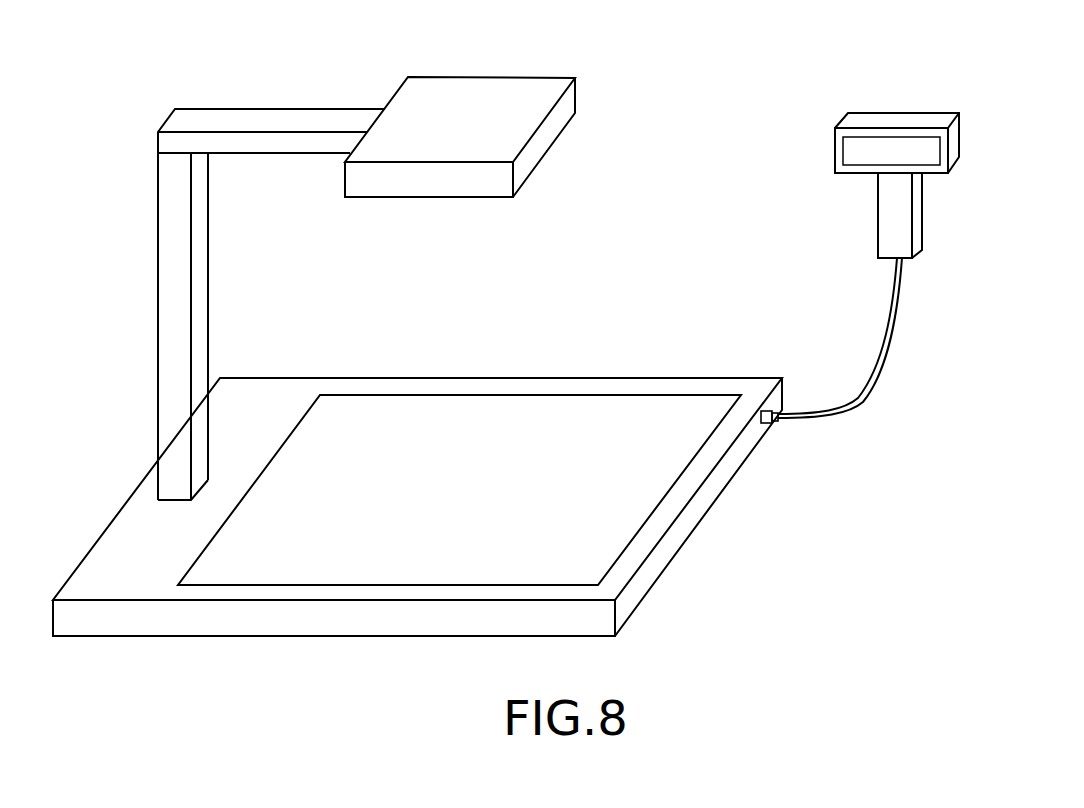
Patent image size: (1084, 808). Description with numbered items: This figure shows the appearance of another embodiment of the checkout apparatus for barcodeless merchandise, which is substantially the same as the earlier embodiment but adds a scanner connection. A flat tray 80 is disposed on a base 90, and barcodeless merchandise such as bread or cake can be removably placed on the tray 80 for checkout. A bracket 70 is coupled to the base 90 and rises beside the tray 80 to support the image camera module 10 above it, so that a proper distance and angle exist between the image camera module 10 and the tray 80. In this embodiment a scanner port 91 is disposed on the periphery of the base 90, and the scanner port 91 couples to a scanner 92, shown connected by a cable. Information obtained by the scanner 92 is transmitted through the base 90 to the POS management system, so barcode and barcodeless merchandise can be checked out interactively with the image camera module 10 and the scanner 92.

The image camera module 10 is at (483, 95).
The bracket 70 is at (170, 275).
The tray 80 is at (532, 393).
The base 90 is at (136, 548).
The scanner port 91 is at (775, 425).
The scanner 92 is at (903, 118).